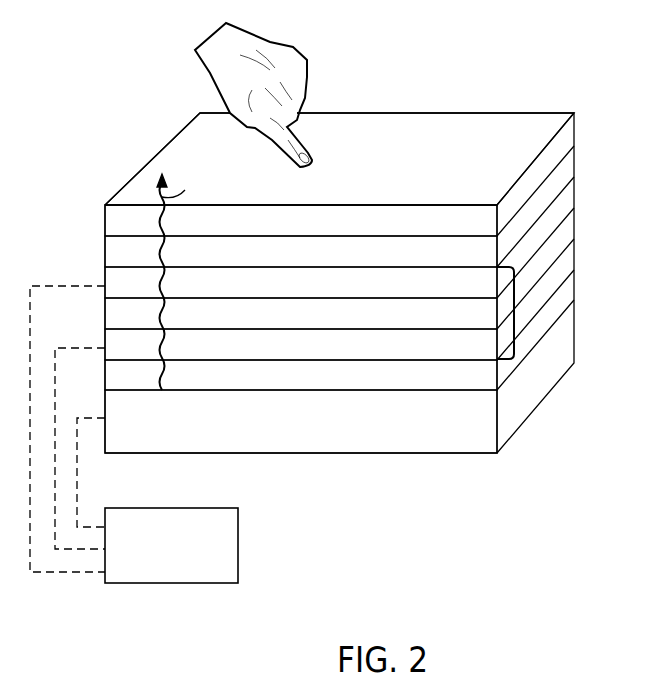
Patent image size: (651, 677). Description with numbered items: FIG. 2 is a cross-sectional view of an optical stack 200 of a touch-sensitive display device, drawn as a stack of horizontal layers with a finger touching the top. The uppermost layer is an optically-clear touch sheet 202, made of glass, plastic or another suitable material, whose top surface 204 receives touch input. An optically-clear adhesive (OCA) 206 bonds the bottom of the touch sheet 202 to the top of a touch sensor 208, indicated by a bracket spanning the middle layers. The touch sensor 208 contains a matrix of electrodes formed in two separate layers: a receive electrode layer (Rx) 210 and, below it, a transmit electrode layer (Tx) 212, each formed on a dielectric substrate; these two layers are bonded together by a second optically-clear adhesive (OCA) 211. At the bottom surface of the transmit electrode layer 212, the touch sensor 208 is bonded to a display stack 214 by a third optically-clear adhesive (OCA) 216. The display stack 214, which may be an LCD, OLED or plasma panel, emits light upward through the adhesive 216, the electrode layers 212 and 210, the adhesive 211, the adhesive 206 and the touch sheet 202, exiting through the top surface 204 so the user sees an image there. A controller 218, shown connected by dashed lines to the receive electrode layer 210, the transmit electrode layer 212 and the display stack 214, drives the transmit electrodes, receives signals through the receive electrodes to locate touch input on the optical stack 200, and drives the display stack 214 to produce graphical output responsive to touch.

The optical stack 200 is at (409, 62).
The touch sheet 202 is at (380, 229).
The top surface 204 is at (466, 182).
The optically-clear adhesive (OCA) 206 is at (337, 260).
The touch sensor 208 is at (514, 310).
The receive electrode layer (Rx) 210 is at (330, 291).
The second optically-clear adhesive (OCA) 211 is at (334, 322).
The transmit electrode layer (Tx) 212 is at (328, 353).
The display stack 214 is at (384, 432).
The third optically-clear adhesive (OCA) 216 is at (337, 384).
The controller 218 is at (186, 567).